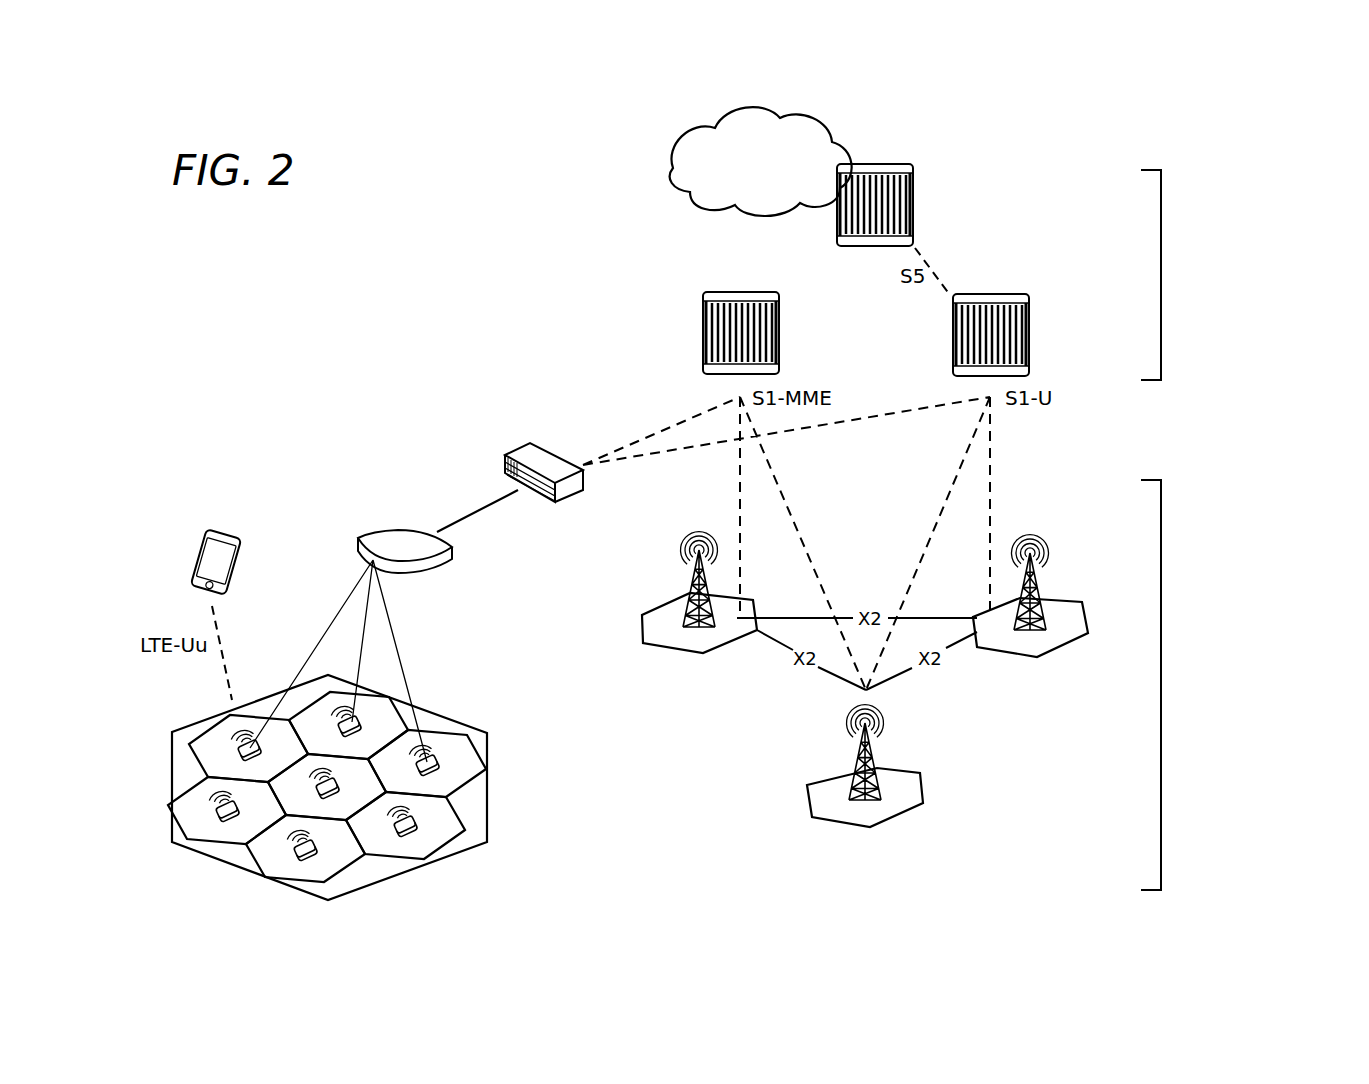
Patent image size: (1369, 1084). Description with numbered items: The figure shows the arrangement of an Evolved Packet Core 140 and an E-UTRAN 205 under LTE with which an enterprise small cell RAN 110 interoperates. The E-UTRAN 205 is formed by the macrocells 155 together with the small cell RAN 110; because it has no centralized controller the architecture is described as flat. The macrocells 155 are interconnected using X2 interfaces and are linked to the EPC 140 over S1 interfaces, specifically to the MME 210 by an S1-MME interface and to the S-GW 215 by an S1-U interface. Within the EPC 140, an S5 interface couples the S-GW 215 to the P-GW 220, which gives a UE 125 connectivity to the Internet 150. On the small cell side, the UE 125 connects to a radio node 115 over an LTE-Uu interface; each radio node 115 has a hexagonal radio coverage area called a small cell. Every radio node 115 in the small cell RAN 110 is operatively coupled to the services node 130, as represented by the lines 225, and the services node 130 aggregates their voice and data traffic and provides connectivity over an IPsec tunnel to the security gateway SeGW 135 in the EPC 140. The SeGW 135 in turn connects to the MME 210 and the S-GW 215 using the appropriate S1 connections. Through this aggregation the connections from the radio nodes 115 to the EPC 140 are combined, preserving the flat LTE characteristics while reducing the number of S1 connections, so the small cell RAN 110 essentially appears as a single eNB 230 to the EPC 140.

The small cell RAN 110 is at (481, 698).
The radio node 115 is at (473, 790).
The user equipment 125 is at (207, 530).
The services node 130 is at (384, 530).
The security gateway SeGW 135 is at (532, 442).
The Evolved Packet Core 140 is at (1187, 275).
The Internet 150 is at (678, 155).
The macrocell 155 is at (1085, 580).
The E-UTRAN 205 is at (1205, 685).
The MME 210 is at (780, 306).
The S-GW 215 is at (1032, 322).
The P-GW 220 is at (915, 174).
The lines 225 is at (392, 614).
The single eNB 230 is at (488, 748).